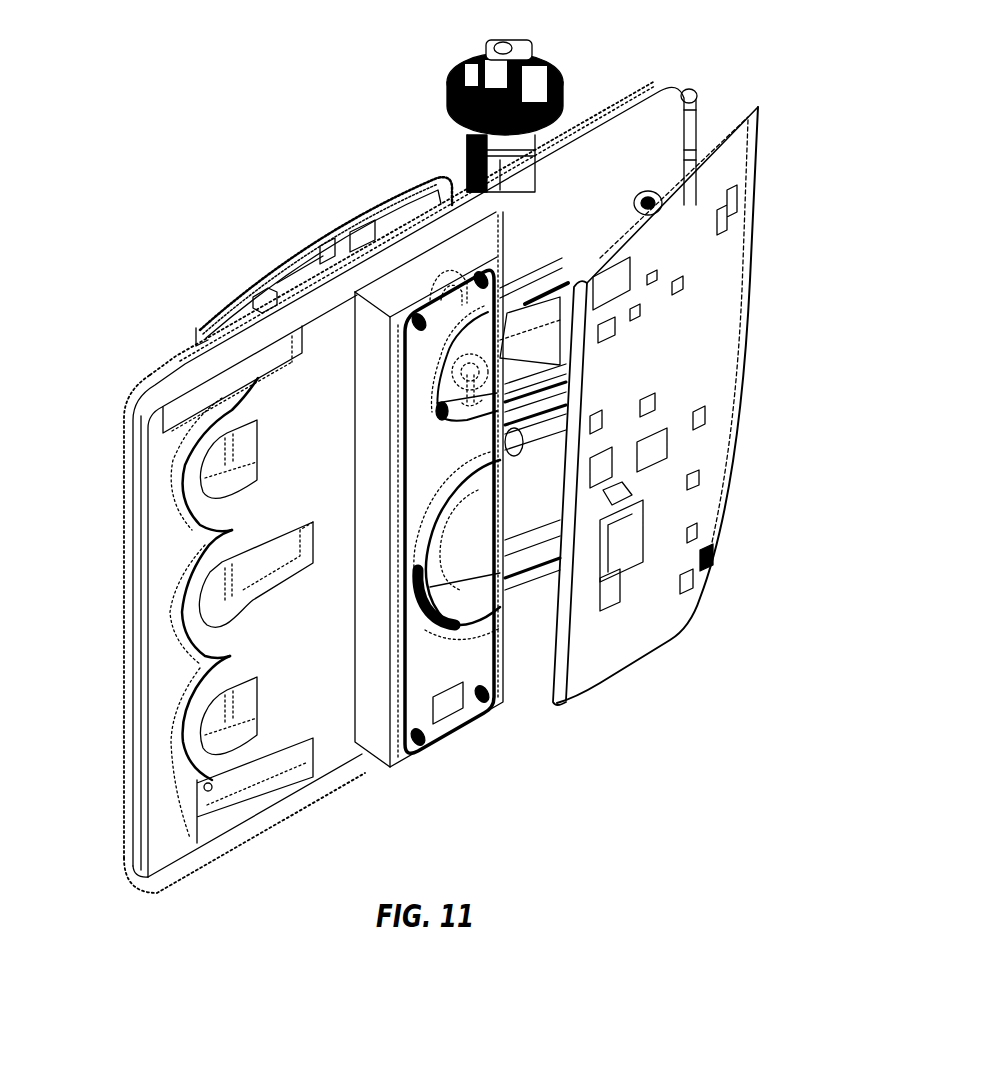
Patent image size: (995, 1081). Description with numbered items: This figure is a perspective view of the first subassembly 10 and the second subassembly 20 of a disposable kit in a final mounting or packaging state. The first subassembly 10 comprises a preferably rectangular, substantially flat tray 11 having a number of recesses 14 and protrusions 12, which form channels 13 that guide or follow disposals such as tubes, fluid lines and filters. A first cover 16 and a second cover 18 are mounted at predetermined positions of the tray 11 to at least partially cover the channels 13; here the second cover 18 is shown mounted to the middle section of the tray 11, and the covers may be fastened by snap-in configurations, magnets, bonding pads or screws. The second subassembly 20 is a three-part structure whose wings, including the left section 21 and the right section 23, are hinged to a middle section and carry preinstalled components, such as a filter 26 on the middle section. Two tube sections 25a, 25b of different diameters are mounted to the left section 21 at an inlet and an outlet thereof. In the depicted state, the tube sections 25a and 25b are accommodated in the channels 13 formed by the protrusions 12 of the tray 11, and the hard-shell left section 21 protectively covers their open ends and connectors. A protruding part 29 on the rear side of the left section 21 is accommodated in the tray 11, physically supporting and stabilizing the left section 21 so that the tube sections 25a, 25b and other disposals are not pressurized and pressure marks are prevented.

The first subassembly 10 is at (155, 912).
The tray 11 is at (167, 362).
The protrusions 12 is at (353, 740).
The channels 13 is at (193, 500).
The recesses 14 is at (153, 433).
The first cover 16 is at (123, 780).
The second cover 18 is at (428, 697).
The second subassembly 20 is at (773, 105).
The left section 21 is at (620, 640).
The right section 23 is at (325, 222).
The tube section 25a is at (467, 427).
The tube section 25b is at (466, 622).
The filter 26 is at (467, 157).
The protruding part 29 is at (653, 207).